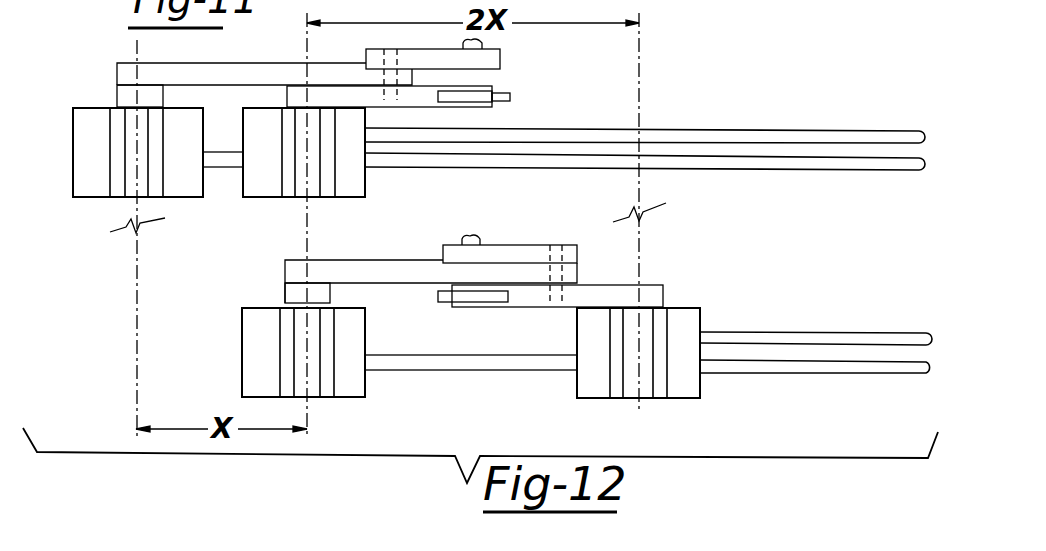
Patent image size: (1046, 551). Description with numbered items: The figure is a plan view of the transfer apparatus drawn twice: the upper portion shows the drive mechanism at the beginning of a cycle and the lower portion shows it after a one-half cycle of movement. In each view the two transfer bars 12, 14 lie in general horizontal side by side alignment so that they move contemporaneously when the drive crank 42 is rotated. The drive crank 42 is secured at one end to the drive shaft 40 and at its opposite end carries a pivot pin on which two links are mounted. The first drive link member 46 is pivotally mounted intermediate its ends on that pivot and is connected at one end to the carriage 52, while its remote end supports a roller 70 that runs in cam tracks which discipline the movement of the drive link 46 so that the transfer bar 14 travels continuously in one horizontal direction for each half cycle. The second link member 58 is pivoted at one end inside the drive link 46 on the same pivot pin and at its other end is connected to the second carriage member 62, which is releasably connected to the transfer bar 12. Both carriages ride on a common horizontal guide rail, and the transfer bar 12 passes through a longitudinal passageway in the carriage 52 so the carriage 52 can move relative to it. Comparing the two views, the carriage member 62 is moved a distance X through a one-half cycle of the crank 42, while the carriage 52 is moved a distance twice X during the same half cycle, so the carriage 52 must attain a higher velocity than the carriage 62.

The transfer bar 12 is at (460, 163).
The transfer bar 14 is at (553, 130).
The drive shaft 40 is at (482, 43).
The drive crank 42 is at (413, 49).
The first drive link member 46 is at (398, 108).
The carriage 52 is at (347, 197).
The second link member 58 is at (195, 63).
The second carriage member 62 is at (177, 198).
The roller 70 is at (510, 97).